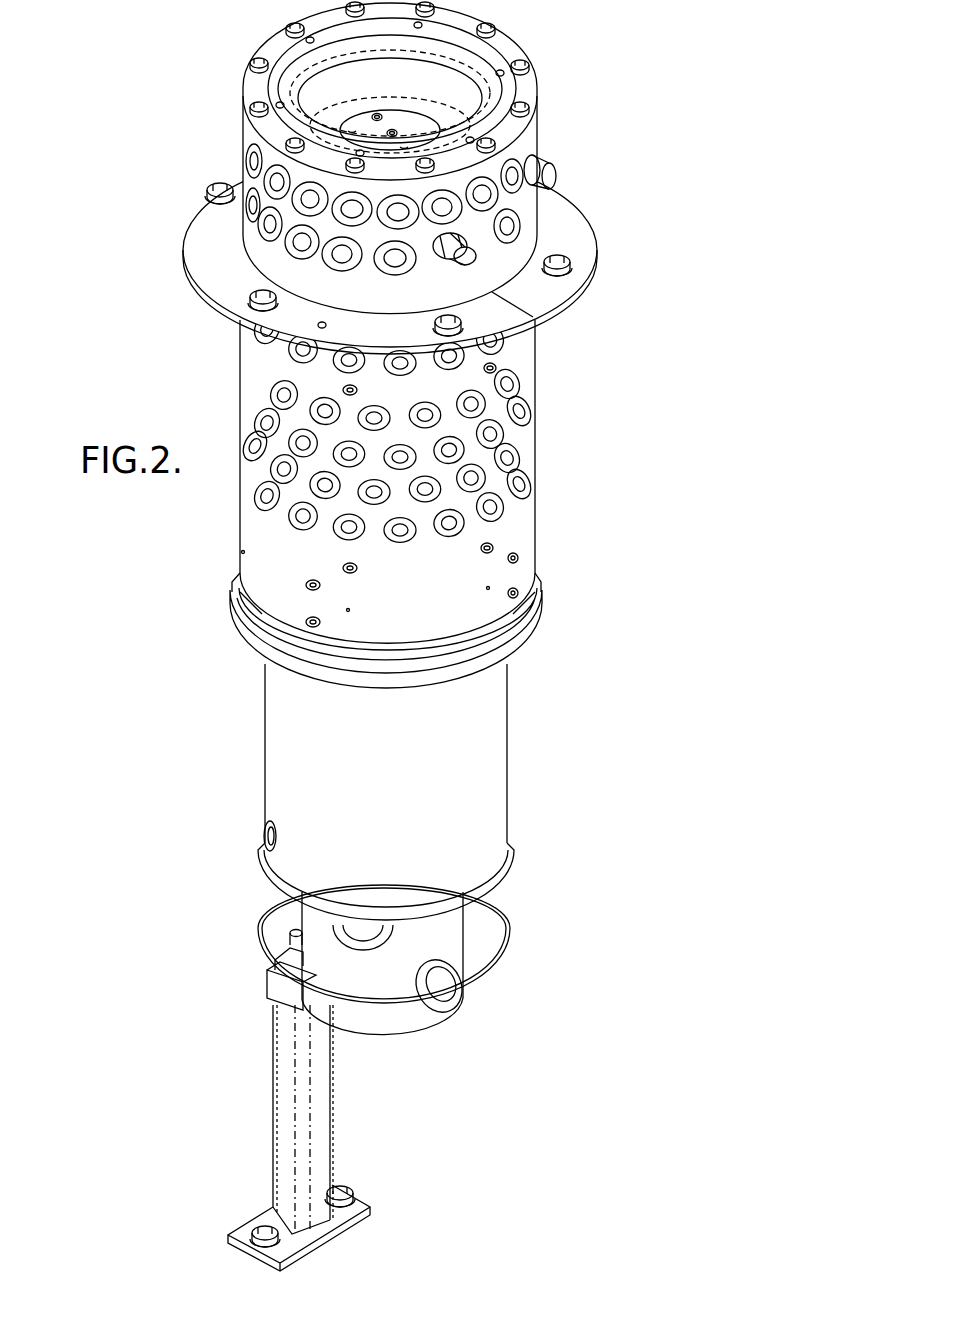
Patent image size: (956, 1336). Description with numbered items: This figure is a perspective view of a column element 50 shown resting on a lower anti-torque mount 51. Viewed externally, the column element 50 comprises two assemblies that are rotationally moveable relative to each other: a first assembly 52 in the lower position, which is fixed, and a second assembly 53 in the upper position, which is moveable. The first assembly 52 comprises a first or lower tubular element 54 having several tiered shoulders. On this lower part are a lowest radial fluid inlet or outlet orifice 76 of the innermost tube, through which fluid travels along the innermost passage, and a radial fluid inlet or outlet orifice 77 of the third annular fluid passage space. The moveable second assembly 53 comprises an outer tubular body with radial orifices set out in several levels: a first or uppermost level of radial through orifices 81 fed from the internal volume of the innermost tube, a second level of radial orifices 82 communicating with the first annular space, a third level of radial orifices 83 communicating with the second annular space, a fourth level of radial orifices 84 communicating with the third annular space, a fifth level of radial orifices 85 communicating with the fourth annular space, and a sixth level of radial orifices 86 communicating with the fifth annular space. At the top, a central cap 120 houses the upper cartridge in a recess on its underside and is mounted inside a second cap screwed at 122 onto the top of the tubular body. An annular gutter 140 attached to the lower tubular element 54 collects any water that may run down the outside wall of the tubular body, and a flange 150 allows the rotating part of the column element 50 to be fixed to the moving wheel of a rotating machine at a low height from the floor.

The column element 50 is at (522, 719).
The lower anti-torque mount 51 is at (336, 1084).
The first assembly 52 is at (268, 720).
The second assembly 53 is at (236, 394).
The first or lower tubular element 54 is at (386, 792).
The lowest radial fluid inlet or outlet orifice 76 is at (440, 1005).
The radial fluid inlet or outlet orifice 77 is at (266, 838).
The first level of radial through orifices 81 is at (516, 226).
The second level of radial orifices 82 is at (295, 356).
The third level of radial orifices 83 is at (518, 389).
The fourth level of radial orifices 84 is at (500, 435).
The fifth level of radial orifices 85 is at (517, 459).
The sixth level of radial orifices 86 is at (525, 488).
The central cap 120 is at (417, 130).
The screw fastening 122 is at (496, 28).
The annular gutter 140 is at (522, 621).
The flange 150 is at (566, 246).